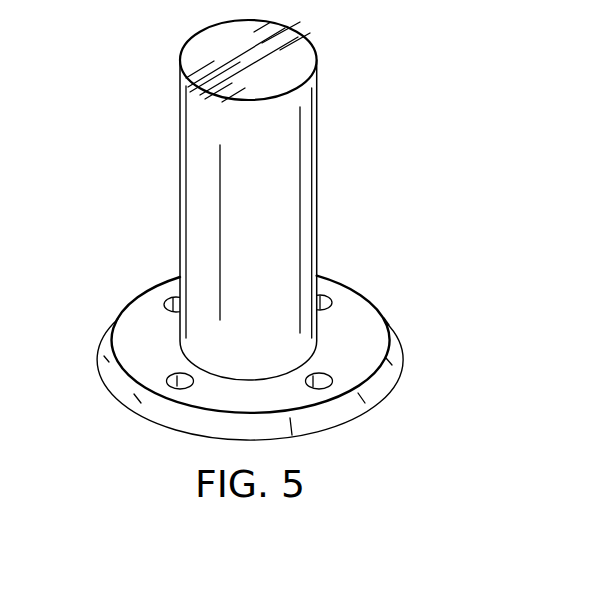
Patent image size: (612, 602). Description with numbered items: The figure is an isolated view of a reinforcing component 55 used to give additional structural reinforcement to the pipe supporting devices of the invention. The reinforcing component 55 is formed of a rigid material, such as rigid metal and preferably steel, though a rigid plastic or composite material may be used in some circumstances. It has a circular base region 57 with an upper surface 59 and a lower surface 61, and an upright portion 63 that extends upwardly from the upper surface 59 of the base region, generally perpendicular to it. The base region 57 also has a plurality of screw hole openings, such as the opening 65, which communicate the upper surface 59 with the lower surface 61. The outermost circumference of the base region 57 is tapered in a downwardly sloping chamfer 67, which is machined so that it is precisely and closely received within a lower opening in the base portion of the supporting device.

The reinforcing component 55 is at (262, 248).
The circular base region 57 is at (262, 353).
The upper surface 59 is at (345, 296).
The lower surface 61 is at (349, 421).
The upright portion 63 is at (318, 203).
The screw hole opening 65 is at (177, 377).
The chamfer 67 is at (166, 417).